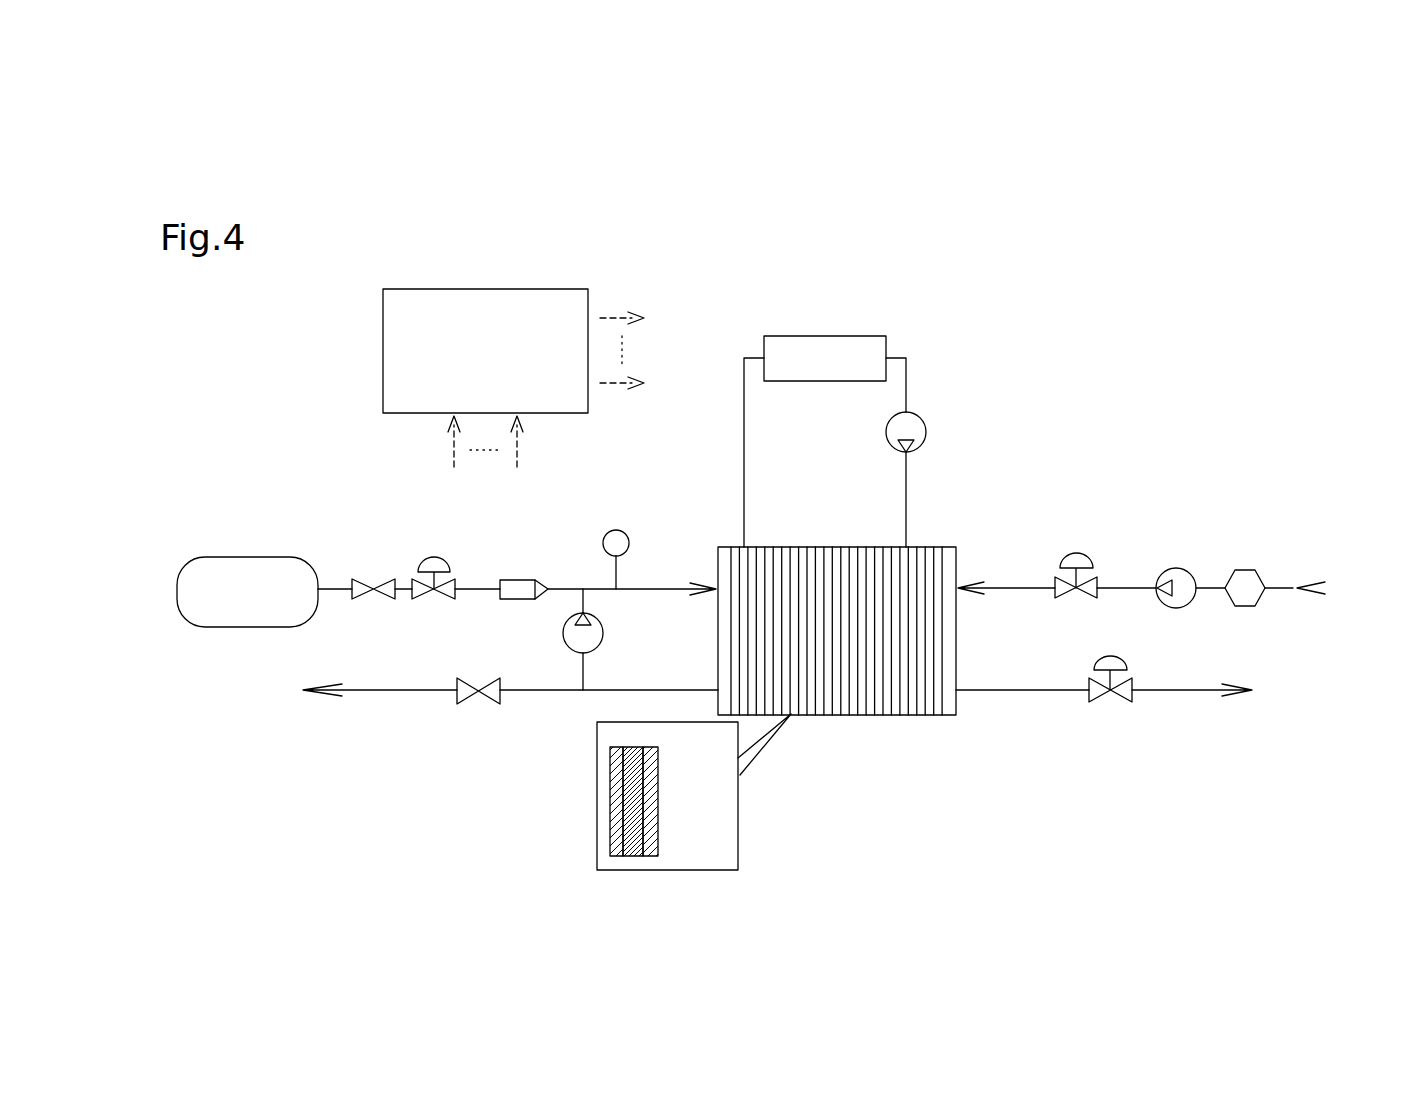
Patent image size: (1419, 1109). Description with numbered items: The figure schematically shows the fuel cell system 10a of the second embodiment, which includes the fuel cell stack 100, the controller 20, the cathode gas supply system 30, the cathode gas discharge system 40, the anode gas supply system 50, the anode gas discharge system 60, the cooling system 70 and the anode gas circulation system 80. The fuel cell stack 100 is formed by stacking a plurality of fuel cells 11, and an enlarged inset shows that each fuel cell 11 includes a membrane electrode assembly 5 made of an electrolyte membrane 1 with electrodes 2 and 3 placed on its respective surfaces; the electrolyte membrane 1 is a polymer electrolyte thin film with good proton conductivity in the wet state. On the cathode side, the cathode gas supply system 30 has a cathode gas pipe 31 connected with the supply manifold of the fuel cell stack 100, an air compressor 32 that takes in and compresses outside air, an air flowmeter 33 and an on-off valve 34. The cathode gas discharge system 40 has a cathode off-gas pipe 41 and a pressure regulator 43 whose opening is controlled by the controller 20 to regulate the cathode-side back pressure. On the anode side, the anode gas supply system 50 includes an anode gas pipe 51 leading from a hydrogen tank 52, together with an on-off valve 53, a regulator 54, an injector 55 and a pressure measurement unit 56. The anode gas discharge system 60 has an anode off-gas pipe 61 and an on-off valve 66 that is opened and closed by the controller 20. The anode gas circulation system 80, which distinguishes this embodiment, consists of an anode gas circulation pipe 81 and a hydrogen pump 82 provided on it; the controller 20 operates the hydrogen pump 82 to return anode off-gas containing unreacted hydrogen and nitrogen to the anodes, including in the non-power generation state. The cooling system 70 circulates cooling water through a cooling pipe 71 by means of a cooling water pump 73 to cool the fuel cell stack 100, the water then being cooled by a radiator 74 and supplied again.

The fuel cell system 10a is at (1244, 291).
The controller 20 is at (383, 318).
The fuel cell stack 100 is at (942, 532).
The fuel cell 11 is at (863, 718).
The membrane electrode assembly 5 is at (667, 796).
The electrolyte membrane 1 is at (633, 785).
The electrode 2 is at (694, 825).
The electrode 3 is at (618, 815).
The cooling system 70 is at (919, 320).
The cooling pipe 71 is at (906, 506).
The cooling water pump 73 is at (908, 412).
The radiator 74 is at (778, 334).
The anode gas supply system 50 is at (313, 490).
The anode gas pipe 51 is at (563, 588).
The hydrogen tank 52 is at (262, 556).
The on-off valve 53 is at (385, 578).
The regulator 54 is at (437, 557).
The injector 55 is at (513, 580).
The pressure measurement unit 56 is at (606, 533).
The anode gas circulation system 80 is at (556, 627).
The anode gas circulation pipe 81 is at (583, 662).
The hydrogen pump 82 is at (604, 633).
The anode gas discharge system 60 is at (435, 722).
The anode off-gas pipe 61 is at (668, 690).
The on-off valve 66 is at (453, 684).
The cathode gas supply system 30 is at (1182, 515).
The cathode gas pipe 31 is at (1010, 585).
The air compressor 32 is at (1180, 568).
The air flowmeter 33 is at (1250, 568).
The on-off valve 34 is at (1078, 552).
The cathode gas discharge system 40 is at (1167, 742).
The cathode off-gas pipe 41 is at (1207, 685).
The pressure regulator 43 is at (1113, 655).